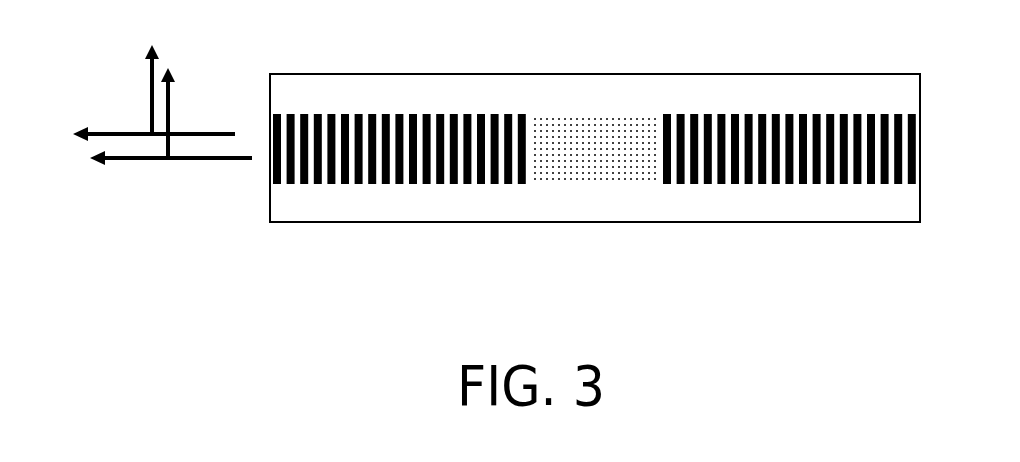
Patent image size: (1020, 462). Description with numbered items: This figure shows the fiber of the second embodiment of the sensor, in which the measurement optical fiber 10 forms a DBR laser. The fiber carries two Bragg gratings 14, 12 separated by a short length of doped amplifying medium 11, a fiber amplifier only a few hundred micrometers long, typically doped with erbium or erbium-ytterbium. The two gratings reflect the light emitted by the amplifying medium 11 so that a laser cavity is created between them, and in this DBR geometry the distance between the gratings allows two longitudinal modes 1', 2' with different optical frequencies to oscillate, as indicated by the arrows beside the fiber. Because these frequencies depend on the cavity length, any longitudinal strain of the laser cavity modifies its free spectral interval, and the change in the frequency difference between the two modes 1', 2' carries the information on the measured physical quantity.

The first longitudinal mode 1' is at (154, 93).
The second longitudinal mode 2' is at (171, 152).
The measurement optical fiber 10 is at (548, 222).
The doped amplifying medium 11 is at (602, 170).
The Bragg grating 12 is at (762, 184).
The Bragg grating 14 is at (365, 184).